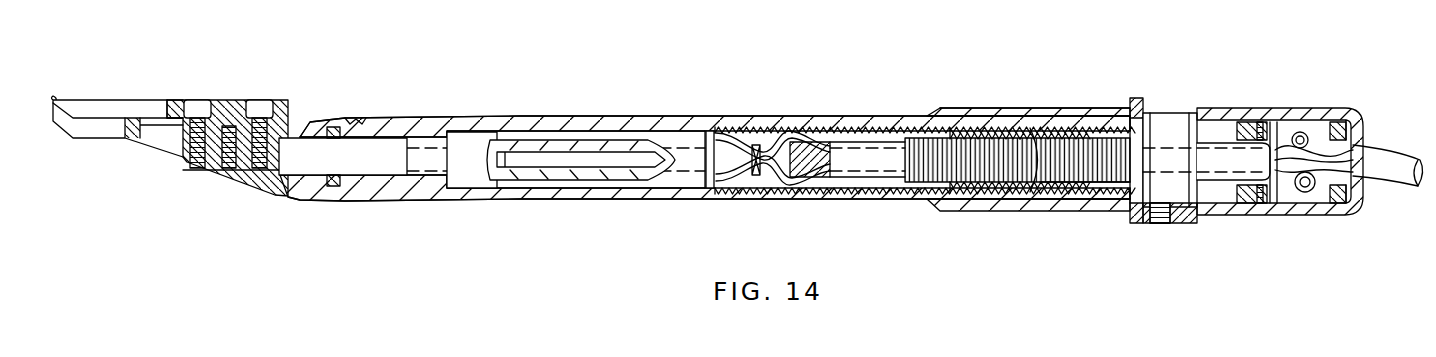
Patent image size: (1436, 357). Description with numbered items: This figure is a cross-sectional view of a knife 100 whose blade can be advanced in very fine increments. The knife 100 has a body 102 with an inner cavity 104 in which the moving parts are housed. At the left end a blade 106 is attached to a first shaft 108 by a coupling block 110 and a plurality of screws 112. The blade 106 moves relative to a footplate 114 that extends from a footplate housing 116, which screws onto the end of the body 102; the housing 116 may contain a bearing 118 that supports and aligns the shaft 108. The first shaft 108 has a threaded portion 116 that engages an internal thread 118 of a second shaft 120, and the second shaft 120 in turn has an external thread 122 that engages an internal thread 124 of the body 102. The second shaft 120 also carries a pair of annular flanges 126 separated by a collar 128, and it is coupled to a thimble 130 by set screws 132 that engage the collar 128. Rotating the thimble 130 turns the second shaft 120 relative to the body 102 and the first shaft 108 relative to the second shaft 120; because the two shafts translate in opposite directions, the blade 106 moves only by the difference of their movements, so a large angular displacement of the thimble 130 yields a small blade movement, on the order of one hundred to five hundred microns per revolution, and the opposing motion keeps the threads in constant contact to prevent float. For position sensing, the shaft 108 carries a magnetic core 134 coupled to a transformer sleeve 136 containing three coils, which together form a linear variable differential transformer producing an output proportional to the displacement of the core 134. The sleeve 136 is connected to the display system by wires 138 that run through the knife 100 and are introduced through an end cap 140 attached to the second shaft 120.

The knife 100 is at (566, 76).
The body 102 is at (598, 118).
The inner cavity 104 is at (804, 175).
The blade 106 is at (108, 100).
The first shaft 108 is at (303, 178).
The coupling block 110 is at (214, 160).
The screws 112 is at (200, 100).
The footplate 114 is at (84, 128).
The footplate housing 116 is at (930, 127).
The bearing 118 is at (337, 121).
The second shaft 120 is at (1078, 140).
The external thread 122 is at (1080, 196).
The internal thread 124 is at (961, 195).
The annular flanges 126 is at (1148, 120).
The collar 128 is at (1176, 160).
The thimble 130 is at (1030, 108).
The set screws 132 is at (1160, 218).
The magnetic core 134 is at (581, 168).
The transformer sleeve 136 is at (483, 190).
The wires 138 is at (756, 170).
The end cap 140 is at (1334, 205).